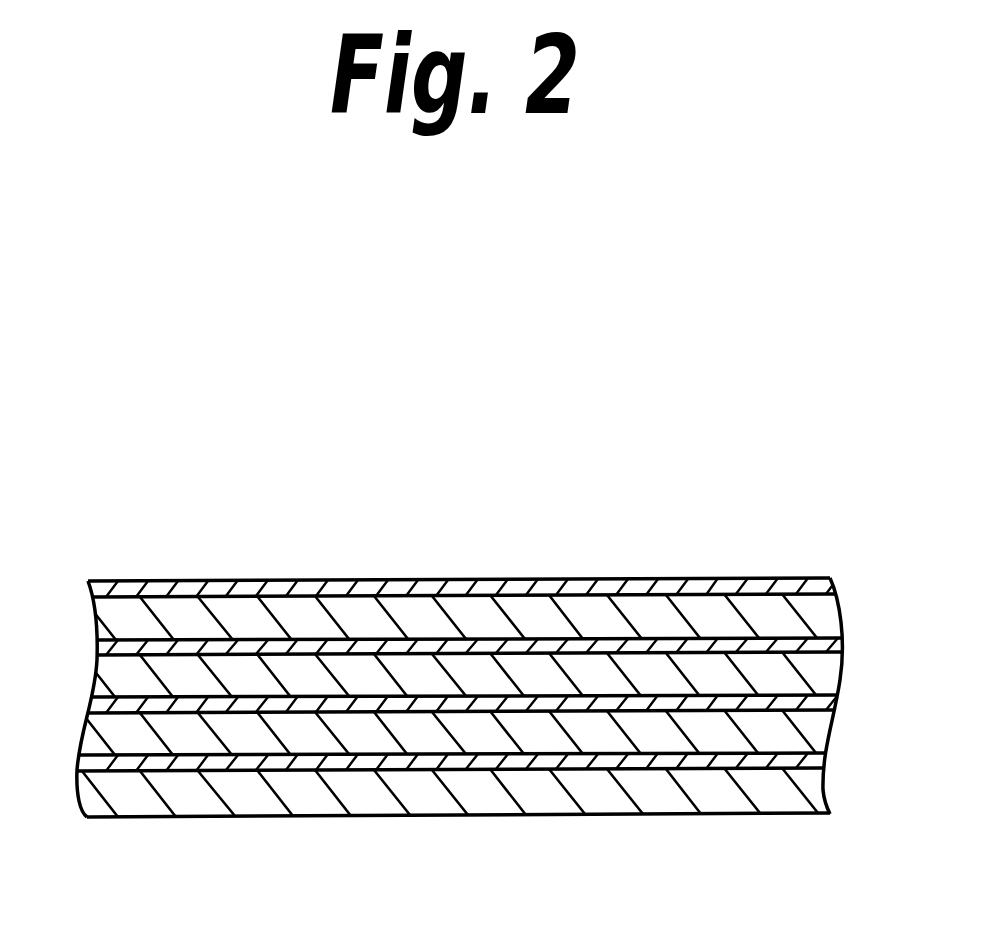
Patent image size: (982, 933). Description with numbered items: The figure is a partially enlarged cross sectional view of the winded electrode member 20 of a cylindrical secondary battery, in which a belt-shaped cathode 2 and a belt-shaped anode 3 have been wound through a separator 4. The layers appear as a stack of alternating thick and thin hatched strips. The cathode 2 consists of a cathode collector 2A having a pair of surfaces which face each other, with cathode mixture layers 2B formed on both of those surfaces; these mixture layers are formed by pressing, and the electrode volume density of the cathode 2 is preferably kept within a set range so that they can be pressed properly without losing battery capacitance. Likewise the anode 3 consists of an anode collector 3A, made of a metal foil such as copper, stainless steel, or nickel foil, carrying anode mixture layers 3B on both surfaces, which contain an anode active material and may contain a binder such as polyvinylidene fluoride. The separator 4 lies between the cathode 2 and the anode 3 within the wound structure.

The winded electrode member 20 is at (714, 345).
The cathode 2 is at (148, 472).
The cathode collector 2A is at (175, 640).
The cathode mixture layers 2B is at (290, 673).
The anode 3 is at (627, 472).
The anode collector 3A is at (455, 752).
The anode mixture layers 3B is at (577, 790).
The separator 4 is at (718, 710).